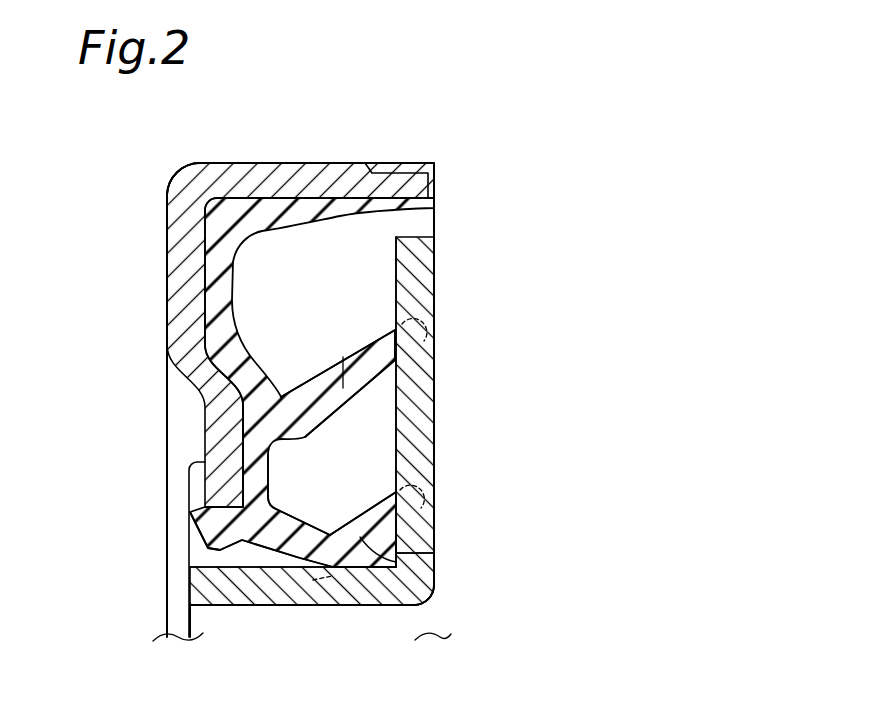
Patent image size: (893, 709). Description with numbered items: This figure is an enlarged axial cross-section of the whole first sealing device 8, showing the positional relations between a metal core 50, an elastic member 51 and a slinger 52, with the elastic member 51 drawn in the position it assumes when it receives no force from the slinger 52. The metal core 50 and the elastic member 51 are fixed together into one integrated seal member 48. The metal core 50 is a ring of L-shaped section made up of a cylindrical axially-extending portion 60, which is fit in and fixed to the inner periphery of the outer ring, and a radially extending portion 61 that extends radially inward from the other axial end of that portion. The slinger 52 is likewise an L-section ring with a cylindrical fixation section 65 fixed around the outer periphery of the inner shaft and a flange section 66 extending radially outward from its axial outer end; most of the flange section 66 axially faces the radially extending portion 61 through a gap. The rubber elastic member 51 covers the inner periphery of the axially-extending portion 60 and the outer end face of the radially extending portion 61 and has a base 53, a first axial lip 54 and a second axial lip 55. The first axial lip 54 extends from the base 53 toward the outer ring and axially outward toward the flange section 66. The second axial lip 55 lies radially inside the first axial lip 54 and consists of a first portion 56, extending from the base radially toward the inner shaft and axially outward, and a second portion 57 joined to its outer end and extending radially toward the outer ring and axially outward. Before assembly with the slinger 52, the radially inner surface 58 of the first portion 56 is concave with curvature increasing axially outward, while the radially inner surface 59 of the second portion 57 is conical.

The first sealing device 8 is at (153, 353).
The seal member 48 is at (180, 168).
The metal core 50 is at (170, 232).
The elastic member 51 is at (263, 228).
The slinger 52 is at (425, 401).
The base 53 is at (268, 428).
The first axial lip 54 is at (343, 363).
The second axial lip 55 is at (383, 536).
The first portion 56 is at (274, 530).
The second portion 57 is at (362, 540).
The radially inner surface of the first portion 58 is at (283, 560).
The radially inner surface of the second portion 59 is at (380, 572).
The axially-extending portion 60 is at (308, 185).
The radially extending portion 61 is at (173, 306).
The fixation section 65 is at (357, 596).
The flange section 66 is at (418, 377).